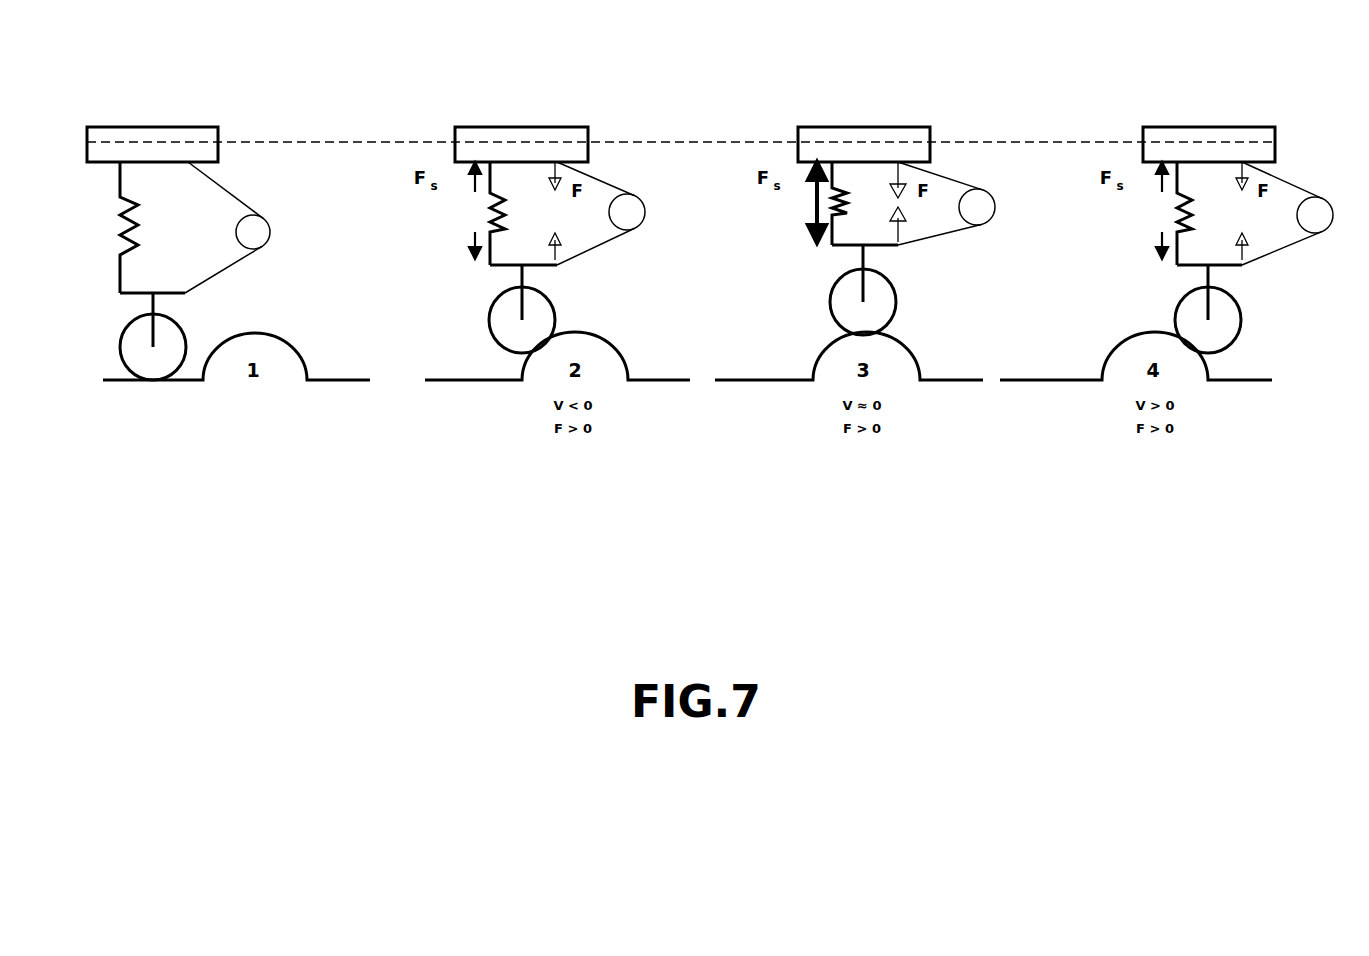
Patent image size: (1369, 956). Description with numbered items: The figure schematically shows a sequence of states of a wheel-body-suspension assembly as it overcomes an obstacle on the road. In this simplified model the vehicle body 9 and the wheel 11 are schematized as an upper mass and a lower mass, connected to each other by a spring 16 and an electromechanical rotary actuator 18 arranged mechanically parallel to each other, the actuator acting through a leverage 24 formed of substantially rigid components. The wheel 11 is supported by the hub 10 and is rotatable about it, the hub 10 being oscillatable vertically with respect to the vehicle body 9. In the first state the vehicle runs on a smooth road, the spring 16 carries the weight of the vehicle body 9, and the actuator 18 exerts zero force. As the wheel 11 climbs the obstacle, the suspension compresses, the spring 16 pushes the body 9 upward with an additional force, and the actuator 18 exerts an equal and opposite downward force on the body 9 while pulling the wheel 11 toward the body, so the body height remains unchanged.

The vehicle body 9 is at (195, 135).
The spring 16 is at (123, 225).
The leverage 24 is at (240, 200).
The electromechanical rotary actuator 18 is at (255, 236).
The wheel 11 is at (150, 363).
The hub 10 is at (180, 382).